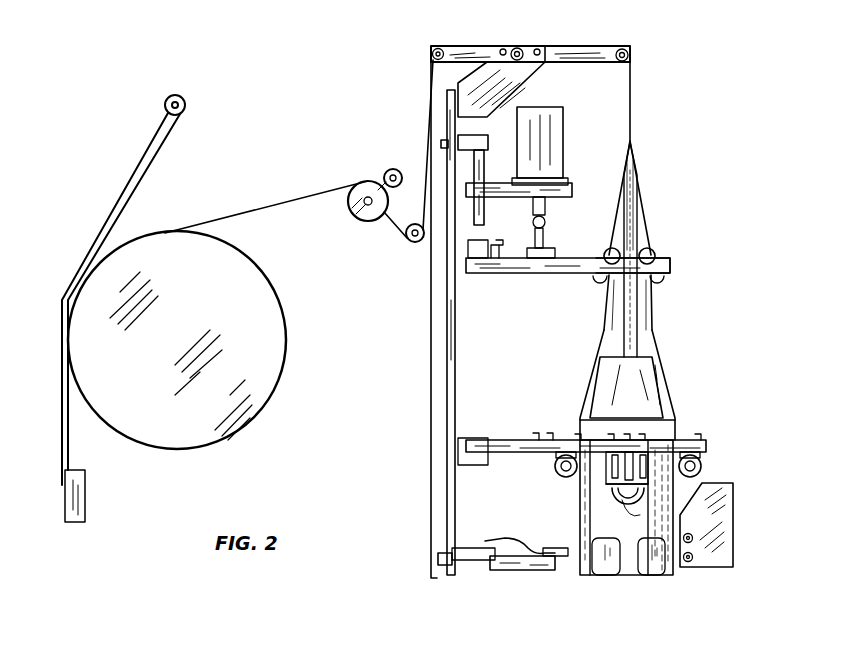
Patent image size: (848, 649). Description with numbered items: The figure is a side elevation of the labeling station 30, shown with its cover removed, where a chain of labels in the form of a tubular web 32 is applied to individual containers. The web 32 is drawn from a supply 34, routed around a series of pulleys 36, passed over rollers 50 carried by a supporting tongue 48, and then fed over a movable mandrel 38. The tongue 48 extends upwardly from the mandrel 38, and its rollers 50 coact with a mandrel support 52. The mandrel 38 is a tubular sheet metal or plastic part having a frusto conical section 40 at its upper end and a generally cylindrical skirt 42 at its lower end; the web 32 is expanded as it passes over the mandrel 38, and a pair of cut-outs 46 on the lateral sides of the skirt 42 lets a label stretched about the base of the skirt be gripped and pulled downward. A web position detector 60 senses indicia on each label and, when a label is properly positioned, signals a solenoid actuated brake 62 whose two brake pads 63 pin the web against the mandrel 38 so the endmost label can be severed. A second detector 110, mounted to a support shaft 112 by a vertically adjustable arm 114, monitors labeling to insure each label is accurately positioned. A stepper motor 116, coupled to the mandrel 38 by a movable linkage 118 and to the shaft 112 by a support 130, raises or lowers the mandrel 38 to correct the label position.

The labeling station 30 is at (672, 352).
The tubular web 32 is at (272, 206).
The supply 34 is at (240, 370).
The pulleys 36 is at (386, 172).
The movable mandrel 38 is at (672, 498).
The frusto conical section 40 is at (646, 395).
The cylindrical skirt 42 is at (580, 512).
The cut-outs 46 is at (650, 555).
The supporting tongue 48 is at (632, 312).
The rollers 50 is at (649, 248).
The mandrel support 52 is at (670, 266).
The web position detector 60 is at (712, 545).
The solenoid actuated brake 62 is at (640, 510).
The brake pads 63 is at (625, 512).
The second detector 110 is at (563, 560).
The support shaft 112 is at (478, 487).
The arm 114 is at (510, 570).
The stepper motor 116 is at (556, 118).
The movable linkage 118 is at (562, 272).
The support 130 is at (563, 190).